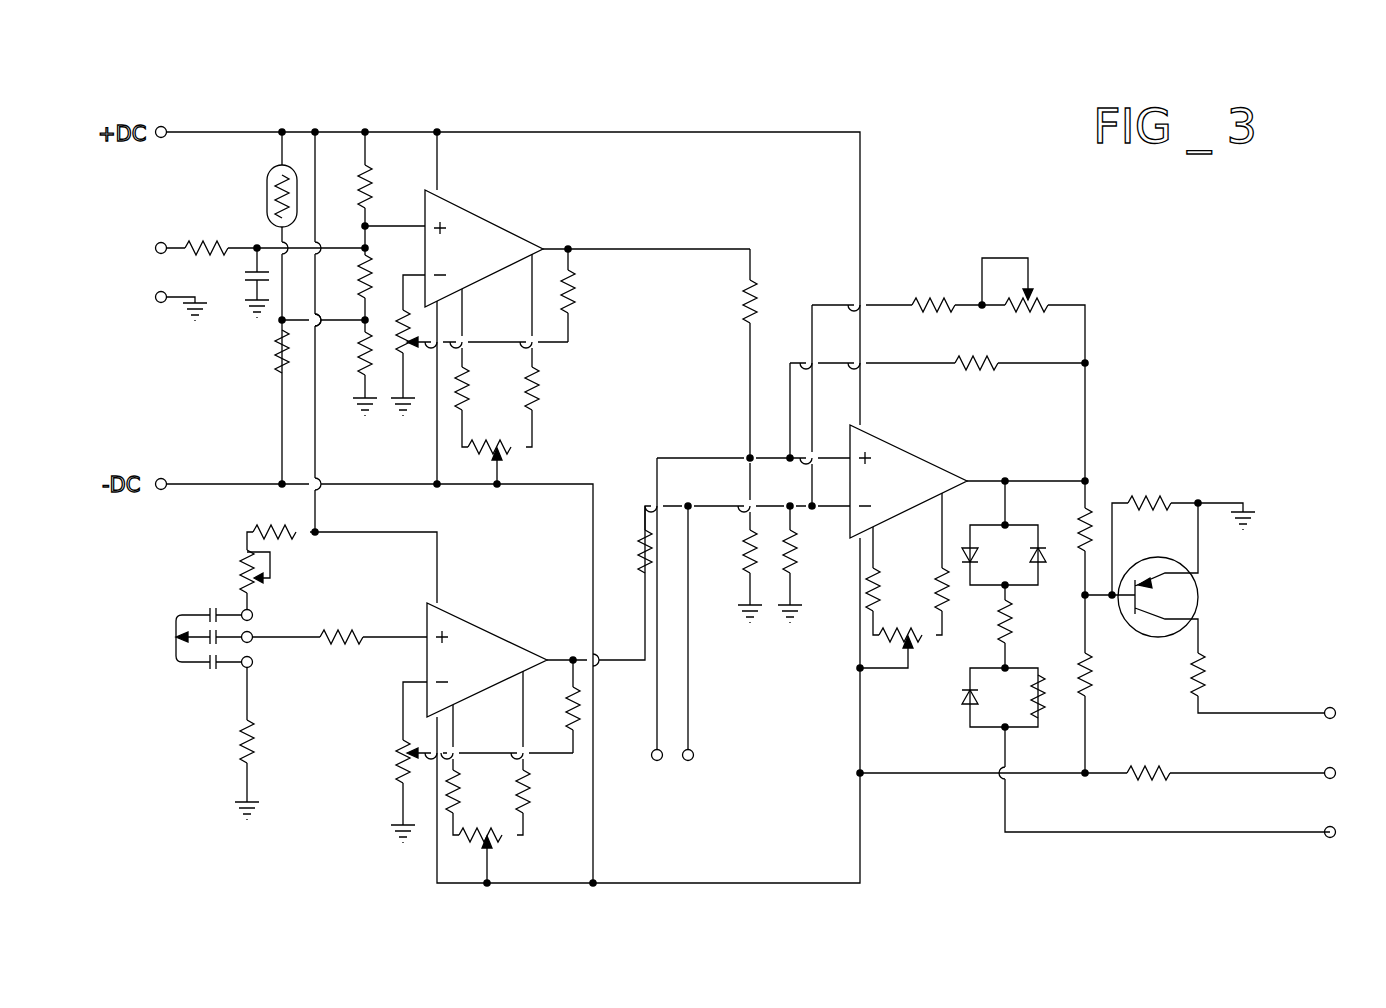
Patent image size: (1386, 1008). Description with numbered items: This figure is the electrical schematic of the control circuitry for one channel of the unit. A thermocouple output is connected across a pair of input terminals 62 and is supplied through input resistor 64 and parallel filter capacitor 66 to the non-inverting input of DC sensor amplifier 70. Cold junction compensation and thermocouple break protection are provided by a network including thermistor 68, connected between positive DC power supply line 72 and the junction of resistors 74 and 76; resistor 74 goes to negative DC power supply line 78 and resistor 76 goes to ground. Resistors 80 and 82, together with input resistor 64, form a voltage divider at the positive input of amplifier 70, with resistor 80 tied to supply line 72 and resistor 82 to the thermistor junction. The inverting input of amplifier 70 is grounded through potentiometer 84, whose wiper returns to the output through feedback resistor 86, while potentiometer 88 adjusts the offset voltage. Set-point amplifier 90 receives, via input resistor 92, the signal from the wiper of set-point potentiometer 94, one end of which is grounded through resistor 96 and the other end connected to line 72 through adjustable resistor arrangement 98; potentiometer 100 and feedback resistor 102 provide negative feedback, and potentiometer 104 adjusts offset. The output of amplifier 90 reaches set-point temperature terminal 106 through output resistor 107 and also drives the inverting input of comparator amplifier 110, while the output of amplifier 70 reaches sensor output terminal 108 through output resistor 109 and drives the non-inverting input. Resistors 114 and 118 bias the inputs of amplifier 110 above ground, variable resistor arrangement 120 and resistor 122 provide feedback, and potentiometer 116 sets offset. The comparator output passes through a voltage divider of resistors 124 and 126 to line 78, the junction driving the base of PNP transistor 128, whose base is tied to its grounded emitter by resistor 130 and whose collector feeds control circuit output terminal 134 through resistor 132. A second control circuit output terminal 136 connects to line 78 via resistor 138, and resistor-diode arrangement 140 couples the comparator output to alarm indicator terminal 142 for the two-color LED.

The input terminals 62 is at (155, 294).
The input resistor 64 is at (207, 242).
The filter capacitor 66 is at (250, 272).
The thermistor 68 is at (267, 188).
The DC sensor amplifier 70 is at (485, 214).
The positive DC power supply line 72 is at (582, 132).
The resistor 74 is at (276, 345).
The resistor 76 is at (362, 355).
The negative DC power supply line 78 is at (552, 488).
The resistor 80 is at (362, 215).
The resistor 82 is at (370, 300).
The potentiometer 84 is at (398, 348).
The feedback resistor 86 is at (575, 292).
The potentiometer 88 is at (505, 456).
The DC set-point amplifier 90 is at (503, 630).
The input resistor 92 is at (334, 622).
The potentiometer 94 is at (172, 628).
The resistor 96 is at (240, 740).
The adjustable resistor arrangement 98 is at (238, 540).
The potentiometer 100 is at (395, 760).
The feedback resistor 102 is at (575, 745).
The potentiometer 104 is at (492, 856).
The set-point temperature terminal 106 is at (696, 766).
The output resistor 107 is at (640, 556).
The sensor output terminal 108 is at (655, 766).
The output resistor 109 is at (745, 305).
The comparator amplifier 110 is at (912, 455).
The resistor 114 is at (745, 562).
The potentiometer 116 is at (915, 650).
The resistor 118 is at (790, 546).
The variable resistor arrangement 120 is at (962, 292).
The resistor 122 is at (978, 370).
The resistor 124 is at (1080, 536).
The resistor 126 is at (1092, 682).
The PNP transistor 128 is at (1207, 597).
The resistor 130 is at (1160, 497).
The resistor 132 is at (1202, 670).
The control circuit output terminal 134 is at (1330, 707).
The second control circuit output terminal 136 is at (1325, 767).
The resistor 138 is at (1160, 780).
The resistor-diode arrangement 140 is at (1018, 598).
The alarm indicator terminal 142 is at (1334, 840).